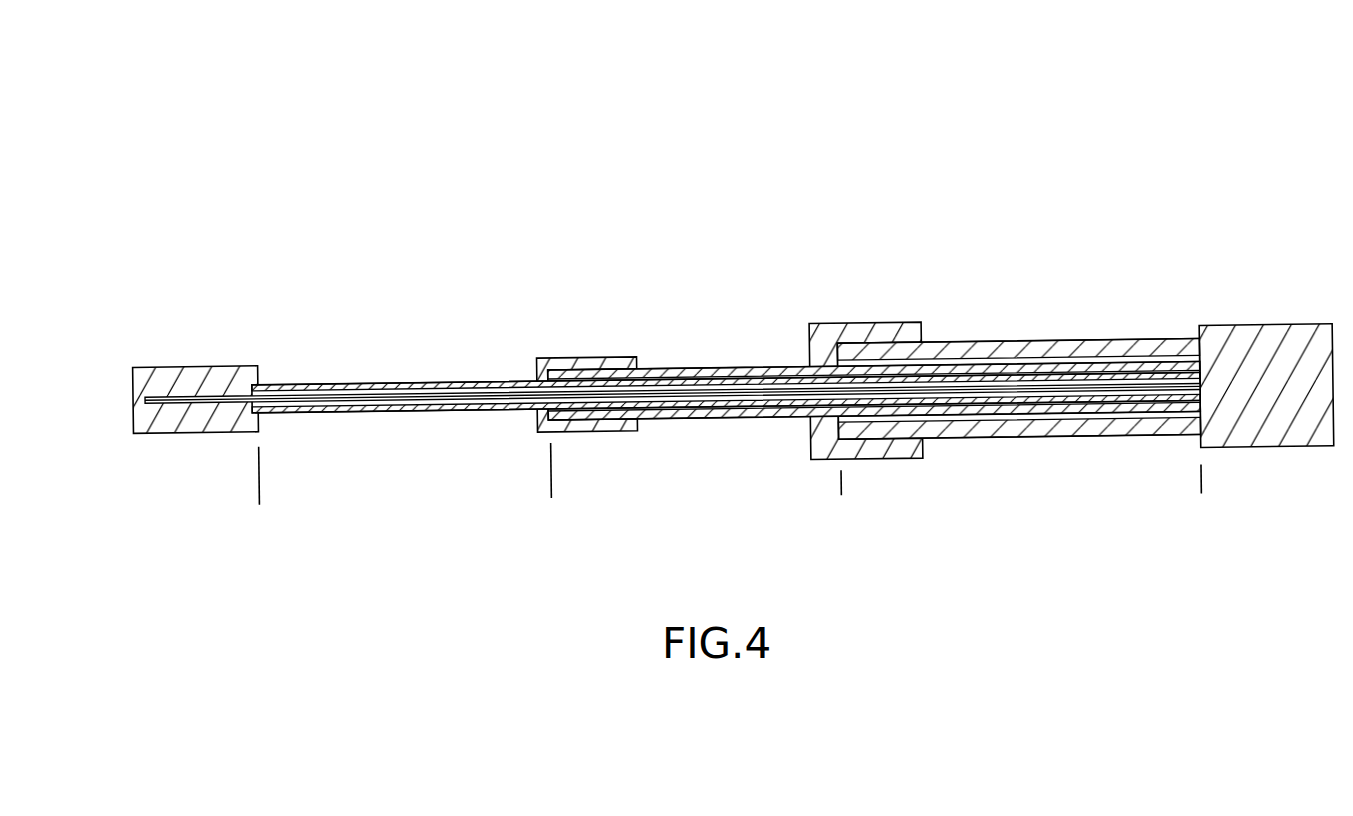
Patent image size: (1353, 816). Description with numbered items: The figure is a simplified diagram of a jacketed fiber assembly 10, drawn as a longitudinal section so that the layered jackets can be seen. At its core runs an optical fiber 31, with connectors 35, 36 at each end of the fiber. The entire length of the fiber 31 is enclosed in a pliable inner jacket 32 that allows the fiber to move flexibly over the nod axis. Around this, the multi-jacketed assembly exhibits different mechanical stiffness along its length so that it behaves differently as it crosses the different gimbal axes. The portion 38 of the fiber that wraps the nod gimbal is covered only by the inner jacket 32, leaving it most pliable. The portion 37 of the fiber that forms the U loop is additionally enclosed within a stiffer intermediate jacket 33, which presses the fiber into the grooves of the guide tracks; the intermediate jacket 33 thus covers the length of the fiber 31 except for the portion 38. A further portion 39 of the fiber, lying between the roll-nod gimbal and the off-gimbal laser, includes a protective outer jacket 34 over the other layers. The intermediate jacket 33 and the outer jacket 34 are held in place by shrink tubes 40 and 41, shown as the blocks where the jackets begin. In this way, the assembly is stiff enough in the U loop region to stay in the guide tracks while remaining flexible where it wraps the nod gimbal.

The fiber assembly 10 is at (678, 141).
The optical fiber 31 is at (222, 391).
The pliable inner jacket 32 is at (432, 379).
The intermediate jacket 33 is at (745, 368).
The protective outer jacket 34 is at (1028, 345).
The connector 35 is at (178, 426).
The connector 36 is at (1275, 454).
The portion 37 is at (840, 485).
The portion 38 is at (550, 485).
The portion 39 is at (840, 485).
The shrink tube 40 is at (598, 356).
The shrink tube 41 is at (845, 325).